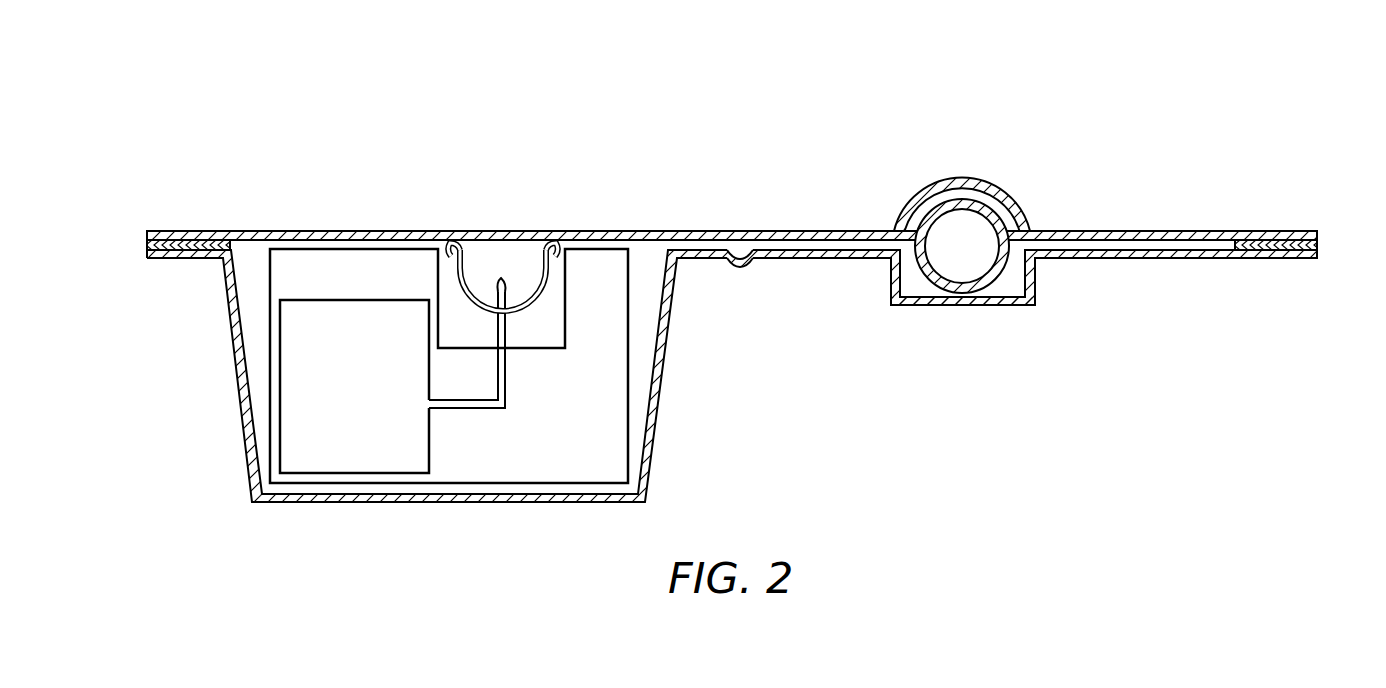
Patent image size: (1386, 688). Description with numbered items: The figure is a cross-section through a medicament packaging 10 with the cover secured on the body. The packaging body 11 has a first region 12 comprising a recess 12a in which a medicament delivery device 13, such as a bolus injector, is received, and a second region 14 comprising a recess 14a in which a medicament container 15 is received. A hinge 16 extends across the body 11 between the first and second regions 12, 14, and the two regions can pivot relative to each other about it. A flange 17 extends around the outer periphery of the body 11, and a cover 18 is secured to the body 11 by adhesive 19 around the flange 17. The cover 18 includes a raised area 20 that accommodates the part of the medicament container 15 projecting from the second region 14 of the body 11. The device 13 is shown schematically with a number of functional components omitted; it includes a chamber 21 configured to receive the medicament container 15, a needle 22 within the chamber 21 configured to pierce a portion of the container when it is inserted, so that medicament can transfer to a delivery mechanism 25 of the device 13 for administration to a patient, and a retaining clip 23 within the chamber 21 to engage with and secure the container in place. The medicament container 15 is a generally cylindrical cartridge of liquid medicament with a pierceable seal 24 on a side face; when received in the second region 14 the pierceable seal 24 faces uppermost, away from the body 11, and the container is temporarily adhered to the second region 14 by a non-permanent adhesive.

The medicament packaging 10 is at (1183, 107).
The packaging body 11 is at (815, 268).
The first region 12 is at (312, 503).
The recess 12a is at (253, 338).
The medicament delivery device 13 is at (577, 484).
The second region 14 is at (1112, 259).
The recess 14a is at (1012, 304).
The medicament container 15 is at (914, 303).
The hinge 16 is at (740, 268).
The flange 17 is at (184, 259).
The cover 18 is at (790, 231).
The adhesive 19 is at (148, 244).
The raised area 20 is at (936, 182).
The chamber 21 is at (553, 250).
The needle 22 is at (499, 289).
The retaining clip 23 is at (461, 248).
The pierceable seal 24 is at (966, 200).
The delivery mechanism 25 is at (430, 446).